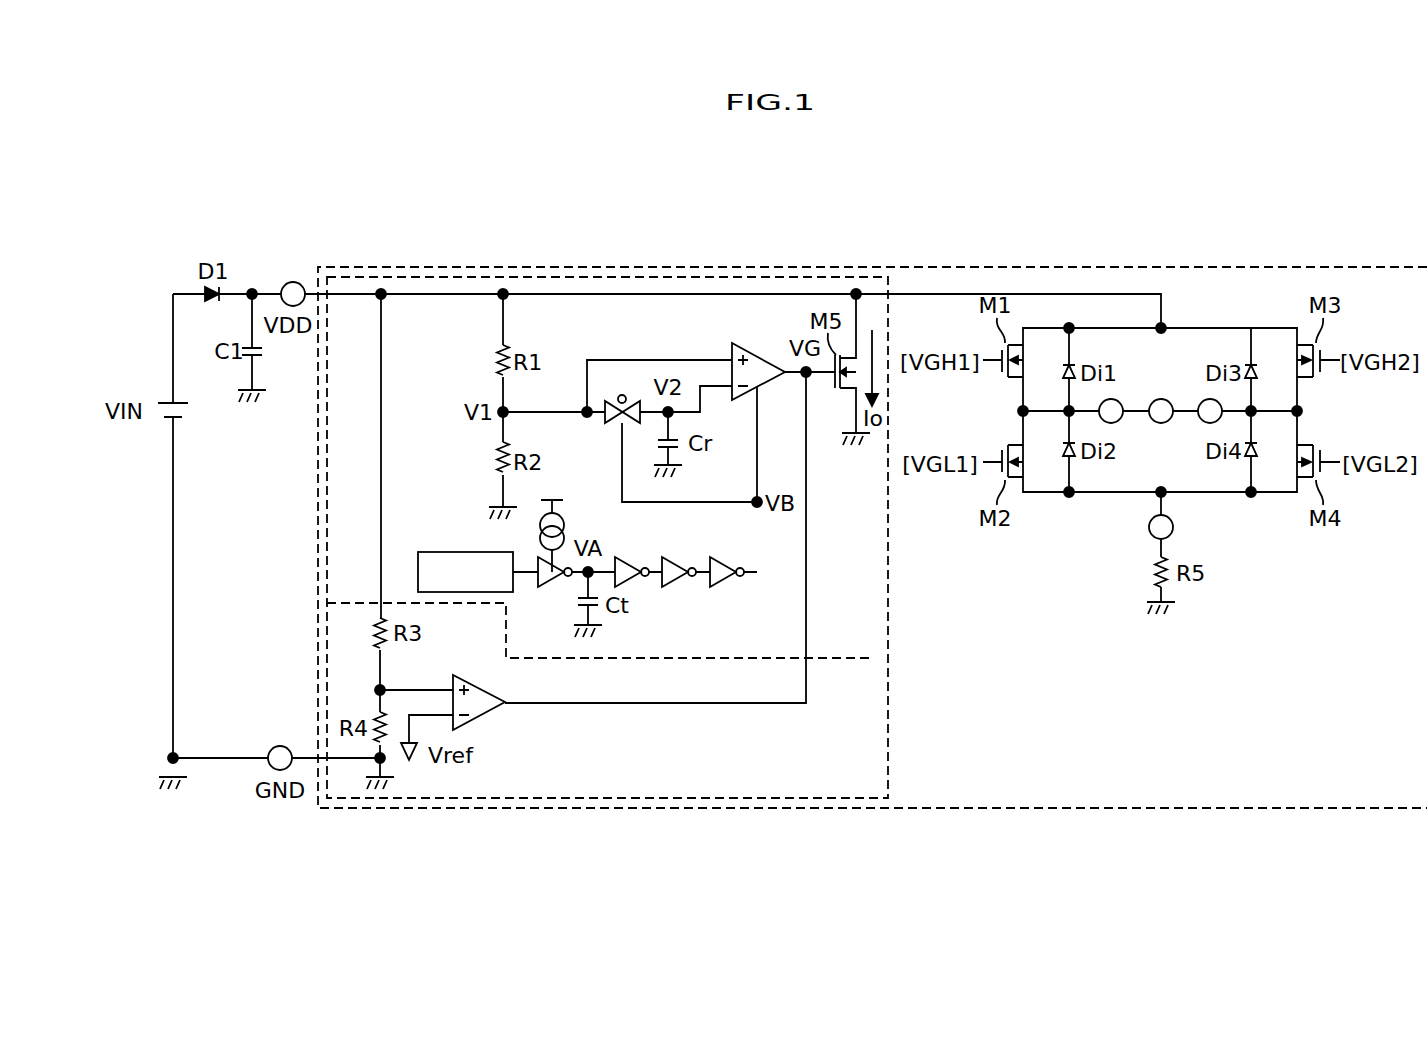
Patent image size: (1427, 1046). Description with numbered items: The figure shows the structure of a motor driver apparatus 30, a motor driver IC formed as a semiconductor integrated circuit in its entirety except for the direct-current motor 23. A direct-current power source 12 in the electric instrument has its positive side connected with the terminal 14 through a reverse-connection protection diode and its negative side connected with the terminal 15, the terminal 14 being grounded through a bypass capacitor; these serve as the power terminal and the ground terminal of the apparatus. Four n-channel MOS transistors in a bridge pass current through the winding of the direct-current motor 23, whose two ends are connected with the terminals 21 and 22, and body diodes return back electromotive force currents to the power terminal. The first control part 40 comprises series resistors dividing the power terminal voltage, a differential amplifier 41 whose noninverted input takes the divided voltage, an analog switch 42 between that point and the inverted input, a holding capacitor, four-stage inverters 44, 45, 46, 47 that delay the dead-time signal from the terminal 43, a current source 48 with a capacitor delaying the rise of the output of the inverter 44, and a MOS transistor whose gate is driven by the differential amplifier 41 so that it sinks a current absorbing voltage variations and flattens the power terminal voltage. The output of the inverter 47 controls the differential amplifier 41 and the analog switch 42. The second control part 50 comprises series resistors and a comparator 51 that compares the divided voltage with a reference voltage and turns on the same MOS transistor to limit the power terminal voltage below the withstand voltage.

The direct-current power source 12 is at (170, 400).
The terminal 14 is at (284, 284).
The terminal 15 is at (278, 746).
The terminal 21 is at (1118, 400).
The terminal 22 is at (1203, 400).
The direct-current motor 23 is at (1161, 424).
The motor driver apparatus 30 is at (1258, 268).
The first control part 40 is at (889, 571).
The differential amplifier 41 is at (762, 345).
The analog switch 42 is at (614, 428).
The terminal 43 is at (440, 552).
The inverter 44 is at (556, 585).
The inverter 45 is at (628, 557).
The inverter 46 is at (677, 557).
The inverter 47 is at (727, 557).
The current source 48 is at (565, 526).
The second control part 50 is at (889, 733).
The comparator 51 is at (486, 675).